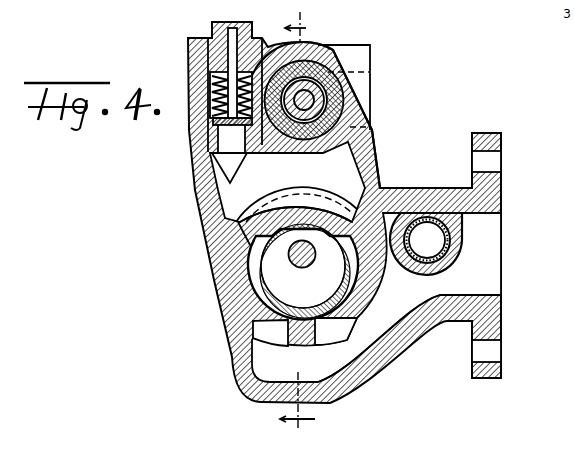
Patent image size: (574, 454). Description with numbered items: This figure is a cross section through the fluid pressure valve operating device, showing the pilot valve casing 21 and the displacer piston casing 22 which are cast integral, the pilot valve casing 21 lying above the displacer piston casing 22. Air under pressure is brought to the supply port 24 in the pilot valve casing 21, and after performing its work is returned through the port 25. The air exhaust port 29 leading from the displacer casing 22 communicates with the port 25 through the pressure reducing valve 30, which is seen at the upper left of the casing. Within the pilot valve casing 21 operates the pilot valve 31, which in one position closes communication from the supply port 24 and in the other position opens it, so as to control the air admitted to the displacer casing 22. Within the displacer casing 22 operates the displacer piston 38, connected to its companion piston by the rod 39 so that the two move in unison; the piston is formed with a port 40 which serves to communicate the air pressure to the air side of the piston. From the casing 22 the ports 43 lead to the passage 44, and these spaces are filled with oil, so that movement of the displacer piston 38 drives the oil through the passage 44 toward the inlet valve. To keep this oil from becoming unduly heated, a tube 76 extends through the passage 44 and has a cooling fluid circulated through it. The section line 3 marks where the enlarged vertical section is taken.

The section line 3— 3 is at (299, 226).
The pilot valve casing 21 is at (318, 68).
The displacer piston casing 22 is at (230, 283).
The supply port 24 is at (371, 76).
The return port 25 is at (258, 75).
The air exhaust port 29 is at (287, 182).
The pressure reducing valve 30 is at (190, 153).
The pilot valve 31 is at (330, 107).
The displacer piston 38 is at (303, 272).
The rod 39 is at (290, 256).
The piston port 40 is at (313, 208).
The port 43 is at (304, 331).
The passage 44 is at (376, 297).
The cooling tube 76 is at (452, 245).